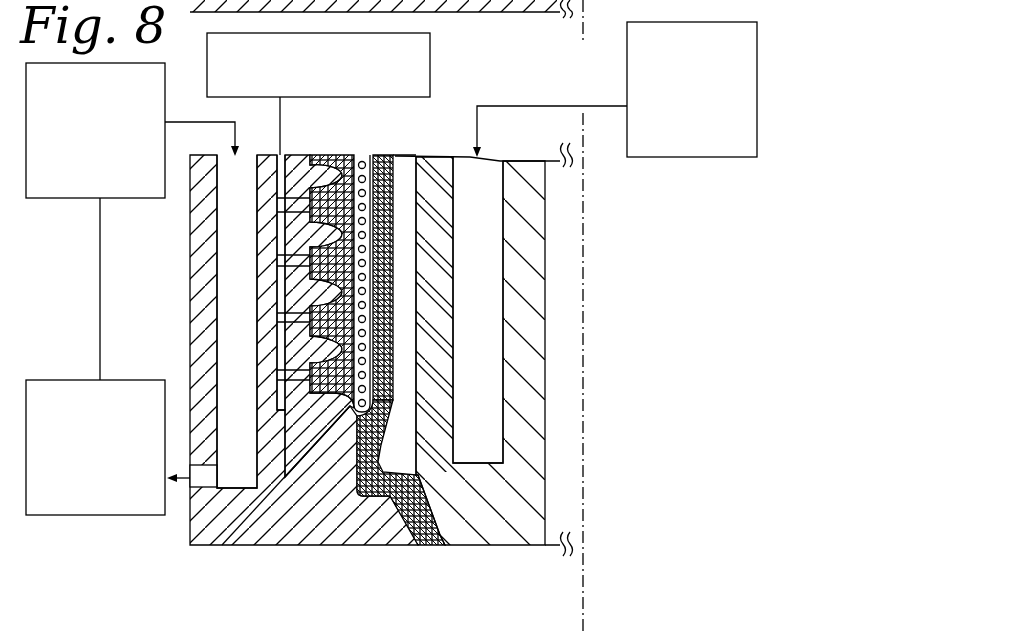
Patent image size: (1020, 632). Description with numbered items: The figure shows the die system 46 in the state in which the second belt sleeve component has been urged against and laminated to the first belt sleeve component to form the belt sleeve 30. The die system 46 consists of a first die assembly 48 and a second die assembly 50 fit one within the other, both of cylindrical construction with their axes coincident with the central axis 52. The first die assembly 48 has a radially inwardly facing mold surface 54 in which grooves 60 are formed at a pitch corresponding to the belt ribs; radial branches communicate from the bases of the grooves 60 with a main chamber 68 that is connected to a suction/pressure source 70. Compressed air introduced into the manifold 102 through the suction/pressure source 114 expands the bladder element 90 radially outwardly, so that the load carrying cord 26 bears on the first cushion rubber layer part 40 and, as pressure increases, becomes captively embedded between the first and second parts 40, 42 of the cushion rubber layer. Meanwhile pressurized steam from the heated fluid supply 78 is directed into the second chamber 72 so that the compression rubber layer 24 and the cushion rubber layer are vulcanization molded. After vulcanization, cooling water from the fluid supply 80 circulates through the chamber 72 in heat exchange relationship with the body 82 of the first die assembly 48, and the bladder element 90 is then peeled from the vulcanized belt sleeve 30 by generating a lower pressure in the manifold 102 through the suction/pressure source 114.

The compression rubber layer 24 is at (322, 153).
The load carrying member(s)/cord(s) 26 is at (384, 156).
The belt sleeve 30 is at (300, 438).
The first cushion rubber layer part 40 is at (351, 153).
The second cushion rubber layer part 42 is at (371, 156).
The die system 46 is at (405, 134).
The first die assembly 48 is at (189, 446).
The second die assembly 50 is at (536, 548).
The central axis 52 is at (583, 305).
The mold surface 54 is at (290, 260).
The grooves 60 is at (300, 317).
The main chamber 68 is at (295, 198).
The suction/pressure source 70 is at (389, 93).
The second chamber 72 is at (230, 242).
The heated fluid supply 78 is at (89, 187).
The fluid supply 80 is at (89, 507).
The body 82 is at (323, 480).
The bladder element 90 is at (385, 403).
The manifold 102 is at (478, 262).
The suction/pressure source 114 is at (680, 145).